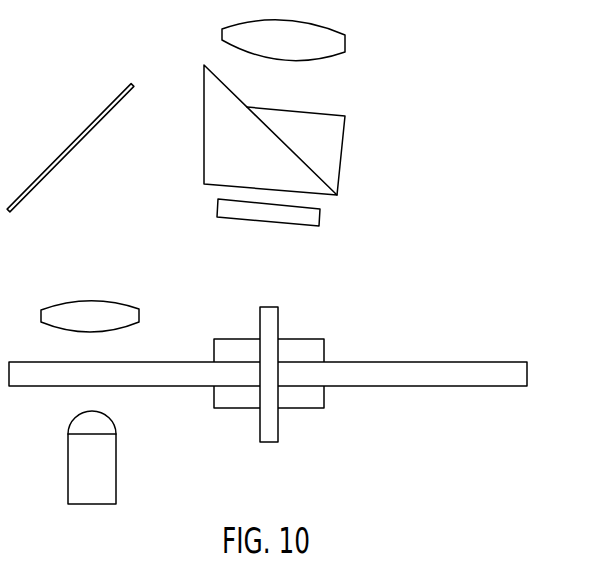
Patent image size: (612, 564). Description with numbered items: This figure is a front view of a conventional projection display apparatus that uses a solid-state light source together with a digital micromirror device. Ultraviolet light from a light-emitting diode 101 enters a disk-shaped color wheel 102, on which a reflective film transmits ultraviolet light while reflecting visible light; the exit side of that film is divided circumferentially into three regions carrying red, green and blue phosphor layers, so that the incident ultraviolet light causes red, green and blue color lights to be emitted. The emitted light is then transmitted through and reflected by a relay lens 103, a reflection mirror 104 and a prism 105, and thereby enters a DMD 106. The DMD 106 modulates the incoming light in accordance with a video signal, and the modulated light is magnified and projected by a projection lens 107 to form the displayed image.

The light-emitting diode 101 is at (107, 470).
The color wheel 102 is at (522, 376).
The relay lens 103 is at (136, 316).
The reflection mirror 104 is at (69, 143).
The prism 105 is at (337, 152).
The DMD 106 is at (318, 217).
The projection lens 107 is at (337, 43).